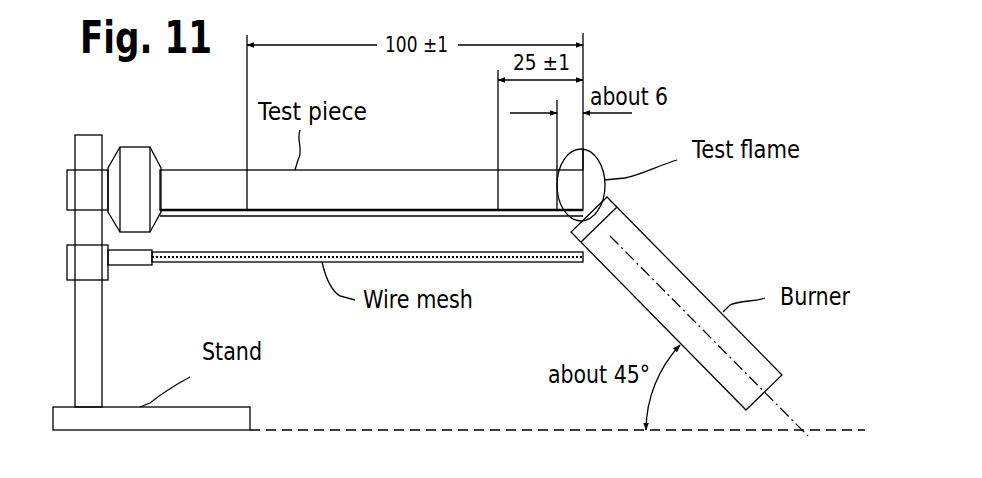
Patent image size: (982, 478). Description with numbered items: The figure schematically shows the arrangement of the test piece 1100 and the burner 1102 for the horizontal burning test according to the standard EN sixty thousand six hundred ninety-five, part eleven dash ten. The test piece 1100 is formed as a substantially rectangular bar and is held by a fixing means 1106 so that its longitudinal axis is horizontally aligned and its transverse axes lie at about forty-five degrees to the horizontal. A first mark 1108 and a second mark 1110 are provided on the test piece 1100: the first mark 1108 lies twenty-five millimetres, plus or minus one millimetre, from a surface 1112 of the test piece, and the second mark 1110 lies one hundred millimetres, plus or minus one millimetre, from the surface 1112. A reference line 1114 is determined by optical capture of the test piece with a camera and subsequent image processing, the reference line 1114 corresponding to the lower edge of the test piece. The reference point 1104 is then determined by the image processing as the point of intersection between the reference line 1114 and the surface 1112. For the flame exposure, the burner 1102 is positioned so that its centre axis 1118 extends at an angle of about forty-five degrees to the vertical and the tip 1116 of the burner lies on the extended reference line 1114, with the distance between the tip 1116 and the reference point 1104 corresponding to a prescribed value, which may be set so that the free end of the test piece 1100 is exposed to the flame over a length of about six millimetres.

The test piece 1100 is at (318, 198).
The burner 1102 is at (672, 264).
The reference point 1104 is at (599, 192).
The fixing means 1106 is at (93, 345).
The first mark 1108 is at (487, 183).
The second mark 1110 is at (248, 190).
The surface of the test piece 1112 is at (598, 177).
The reference line 1114 is at (390, 219).
The tip of the burner 1116 is at (595, 222).
The centre axis of the burner 1118 is at (787, 413).